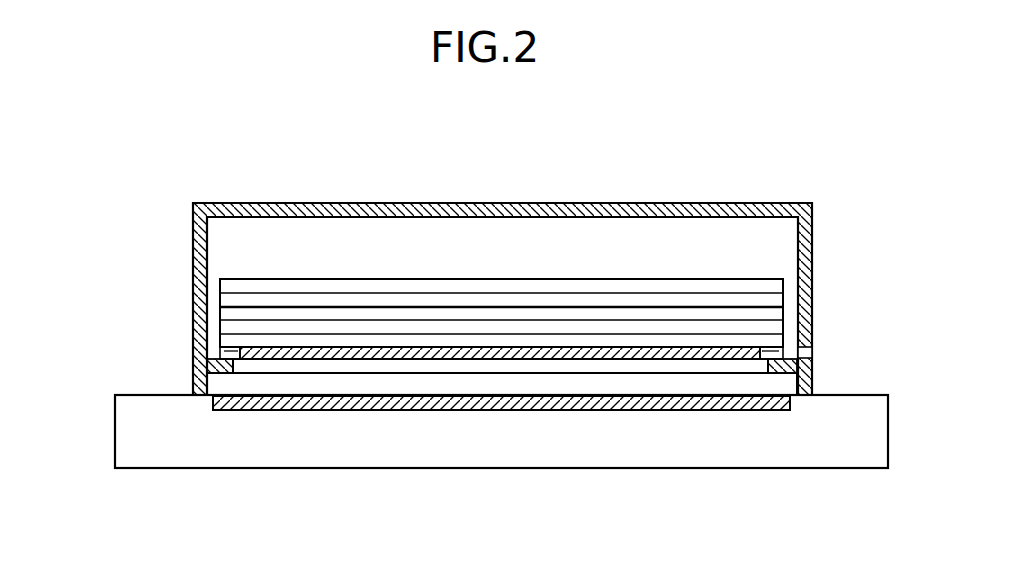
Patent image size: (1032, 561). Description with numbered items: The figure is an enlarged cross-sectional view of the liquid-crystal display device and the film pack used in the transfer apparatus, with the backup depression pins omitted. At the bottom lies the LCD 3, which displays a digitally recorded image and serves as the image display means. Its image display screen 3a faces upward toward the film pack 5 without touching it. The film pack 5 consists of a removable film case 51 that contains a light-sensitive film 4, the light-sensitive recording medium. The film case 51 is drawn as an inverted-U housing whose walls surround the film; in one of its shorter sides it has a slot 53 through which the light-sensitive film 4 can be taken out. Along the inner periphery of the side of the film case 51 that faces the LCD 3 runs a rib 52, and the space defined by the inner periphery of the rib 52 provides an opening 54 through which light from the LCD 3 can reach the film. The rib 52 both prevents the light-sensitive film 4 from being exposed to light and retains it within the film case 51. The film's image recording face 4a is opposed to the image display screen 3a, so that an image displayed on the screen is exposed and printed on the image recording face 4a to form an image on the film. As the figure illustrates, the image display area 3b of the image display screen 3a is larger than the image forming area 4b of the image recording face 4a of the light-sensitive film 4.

The liquid-crystal display device 3 is at (501, 451).
The image display screen 3a is at (393, 397).
The image display area 3b is at (328, 410).
The light-sensitive film 4 is at (462, 263).
The image recording face 4a is at (452, 360).
The image forming area 4b is at (396, 353).
The film pack 5 is at (514, 304).
The film case 51 is at (812, 232).
The rib 52 is at (229, 373).
The slot 53 is at (813, 352).
The opening 54 is at (622, 366).